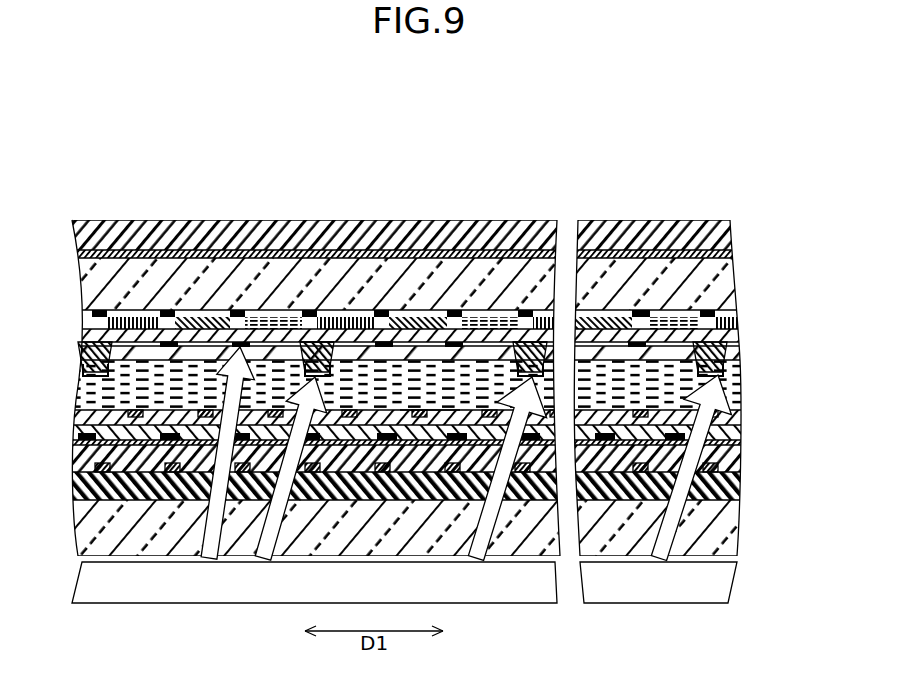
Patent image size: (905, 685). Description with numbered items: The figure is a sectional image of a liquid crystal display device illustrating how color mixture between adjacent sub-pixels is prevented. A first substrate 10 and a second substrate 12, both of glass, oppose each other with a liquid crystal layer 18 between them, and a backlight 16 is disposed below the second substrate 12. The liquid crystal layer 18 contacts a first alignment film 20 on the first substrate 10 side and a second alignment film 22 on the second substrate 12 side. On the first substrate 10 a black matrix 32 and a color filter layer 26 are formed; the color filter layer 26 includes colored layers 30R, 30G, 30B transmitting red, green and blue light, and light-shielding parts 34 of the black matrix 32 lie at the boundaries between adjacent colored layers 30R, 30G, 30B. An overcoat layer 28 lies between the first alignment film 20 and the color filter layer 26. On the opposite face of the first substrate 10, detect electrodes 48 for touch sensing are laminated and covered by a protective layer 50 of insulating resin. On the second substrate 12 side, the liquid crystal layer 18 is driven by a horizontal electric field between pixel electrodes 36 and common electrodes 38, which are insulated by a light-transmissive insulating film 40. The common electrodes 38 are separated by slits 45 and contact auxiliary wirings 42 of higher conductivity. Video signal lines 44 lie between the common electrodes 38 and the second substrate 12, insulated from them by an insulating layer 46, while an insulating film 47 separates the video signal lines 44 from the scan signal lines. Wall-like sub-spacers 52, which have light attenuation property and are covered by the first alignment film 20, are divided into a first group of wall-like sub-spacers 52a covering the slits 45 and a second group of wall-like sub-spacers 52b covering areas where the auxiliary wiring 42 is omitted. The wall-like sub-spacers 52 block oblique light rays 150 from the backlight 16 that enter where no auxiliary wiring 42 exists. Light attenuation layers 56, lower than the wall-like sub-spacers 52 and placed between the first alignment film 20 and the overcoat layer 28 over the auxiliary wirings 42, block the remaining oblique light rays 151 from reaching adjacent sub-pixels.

The first substrate 10 is at (736, 287).
The second substrate 12 is at (736, 527).
The backlight 16 is at (734, 576).
The liquid crystal layer 18 is at (725, 396).
The first alignment film 20 is at (727, 350).
The second alignment film 22 is at (736, 414).
The color filter layer 26 is at (744, 327).
The overcoat layer 28 is at (82, 338).
The red colored layer 30R is at (128, 317).
The green colored layer 30G is at (202, 317).
The blue colored layer 30B is at (274, 317).
The black matrix 32 is at (435, 289).
The light-shielding part 34 is at (103, 310).
The pixel electrode 36 is at (428, 410).
The common electrode 38 is at (78, 445).
The insulating film 40 is at (738, 436).
The auxiliary wiring 42 is at (178, 438).
The video signal line 44 is at (244, 470).
The slit 45 is at (80, 442).
The insulating layer 46 is at (738, 462).
The insulating film 47 is at (738, 489).
The detect electrode 48 is at (736, 255).
The protective layer 50 is at (736, 232).
The wall-like sub-spacer 52 is at (401, 392).
The first group of wall-like sub-spacers 52a is at (100, 378).
The second group of wall-like sub-spacers 52b is at (532, 378).
The light attenuation layer 56 is at (178, 346).
The oblique light ray 150 is at (264, 559).
The oblique light ray 151 is at (207, 559).